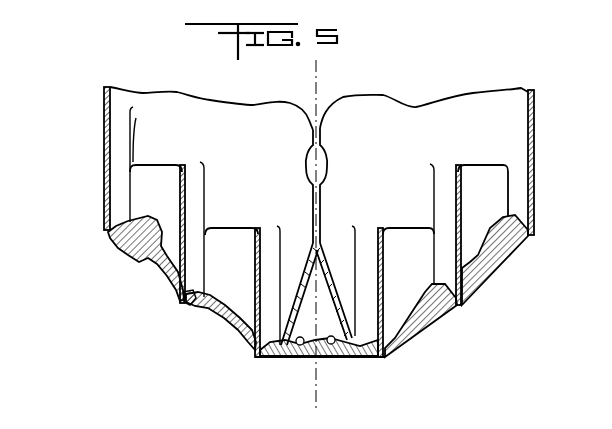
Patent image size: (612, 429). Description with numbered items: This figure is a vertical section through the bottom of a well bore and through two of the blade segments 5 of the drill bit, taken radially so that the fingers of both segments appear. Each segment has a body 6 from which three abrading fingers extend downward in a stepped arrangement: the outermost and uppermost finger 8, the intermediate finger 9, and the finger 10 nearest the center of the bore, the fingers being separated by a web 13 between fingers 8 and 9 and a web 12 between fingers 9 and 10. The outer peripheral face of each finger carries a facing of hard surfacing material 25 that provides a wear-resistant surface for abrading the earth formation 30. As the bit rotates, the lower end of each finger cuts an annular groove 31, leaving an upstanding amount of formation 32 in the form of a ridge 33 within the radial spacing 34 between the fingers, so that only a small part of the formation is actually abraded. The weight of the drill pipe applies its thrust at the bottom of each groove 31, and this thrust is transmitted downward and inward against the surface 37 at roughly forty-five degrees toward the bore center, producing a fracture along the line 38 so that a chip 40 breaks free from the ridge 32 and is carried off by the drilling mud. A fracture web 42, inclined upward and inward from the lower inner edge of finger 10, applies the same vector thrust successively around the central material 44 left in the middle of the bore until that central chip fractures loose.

The blade segment 5 is at (392, 94).
The body 6 is at (210, 115).
The finger 8 is at (118, 191).
The finger 9 is at (176, 293).
The finger 10 is at (273, 323).
The web 12 is at (210, 228).
The web 13 is at (156, 162).
The hard surfacing material 25 is at (105, 137).
The earth formation 30 is at (132, 253).
The groove 31 is at (114, 238).
The upstanding formation 32 is at (143, 216).
The ridge 33 is at (152, 262).
The radial spacing 34 is at (165, 178).
The surface 37 is at (195, 308).
The fracture line 38 is at (117, 247).
The chip 40 is at (142, 232).
The fracture web 42 is at (305, 270).
The central material 44 is at (330, 347).